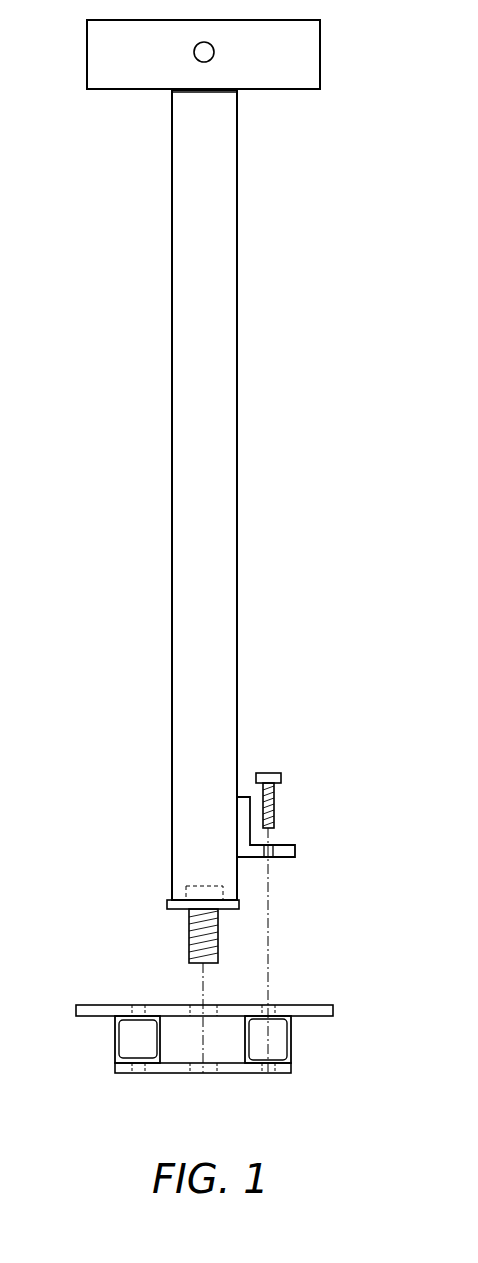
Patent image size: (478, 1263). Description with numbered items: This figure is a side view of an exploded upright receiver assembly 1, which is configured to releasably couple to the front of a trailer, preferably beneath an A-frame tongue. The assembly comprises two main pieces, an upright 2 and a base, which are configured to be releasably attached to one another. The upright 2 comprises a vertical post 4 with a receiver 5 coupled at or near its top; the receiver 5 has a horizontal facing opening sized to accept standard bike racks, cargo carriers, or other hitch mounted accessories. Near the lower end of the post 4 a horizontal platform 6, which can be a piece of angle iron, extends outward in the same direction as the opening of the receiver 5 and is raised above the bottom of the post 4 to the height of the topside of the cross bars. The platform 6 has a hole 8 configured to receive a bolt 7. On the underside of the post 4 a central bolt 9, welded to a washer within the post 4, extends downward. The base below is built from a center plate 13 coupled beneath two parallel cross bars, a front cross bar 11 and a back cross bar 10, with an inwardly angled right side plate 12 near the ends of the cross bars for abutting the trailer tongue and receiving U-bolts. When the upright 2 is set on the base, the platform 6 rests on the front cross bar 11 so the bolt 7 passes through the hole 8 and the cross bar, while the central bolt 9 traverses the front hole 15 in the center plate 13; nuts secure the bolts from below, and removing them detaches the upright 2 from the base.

The upright receiver assembly 1 is at (340, 719).
The upright 2 is at (237, 515).
The vertical post 4 is at (200, 394).
The receiver 5 is at (309, 50).
The horizontal platform 6 is at (295, 846).
The bolt 7 is at (275, 802).
The hole 8 is at (273, 850).
The central bolt 9 is at (218, 947).
The back cross bar 10 is at (115, 1035).
The front cross bar 11 is at (291, 1037).
The right side plate 12 is at (333, 1012).
The center plate 13 is at (242, 1073).
The front hole 15 is at (192, 1073).